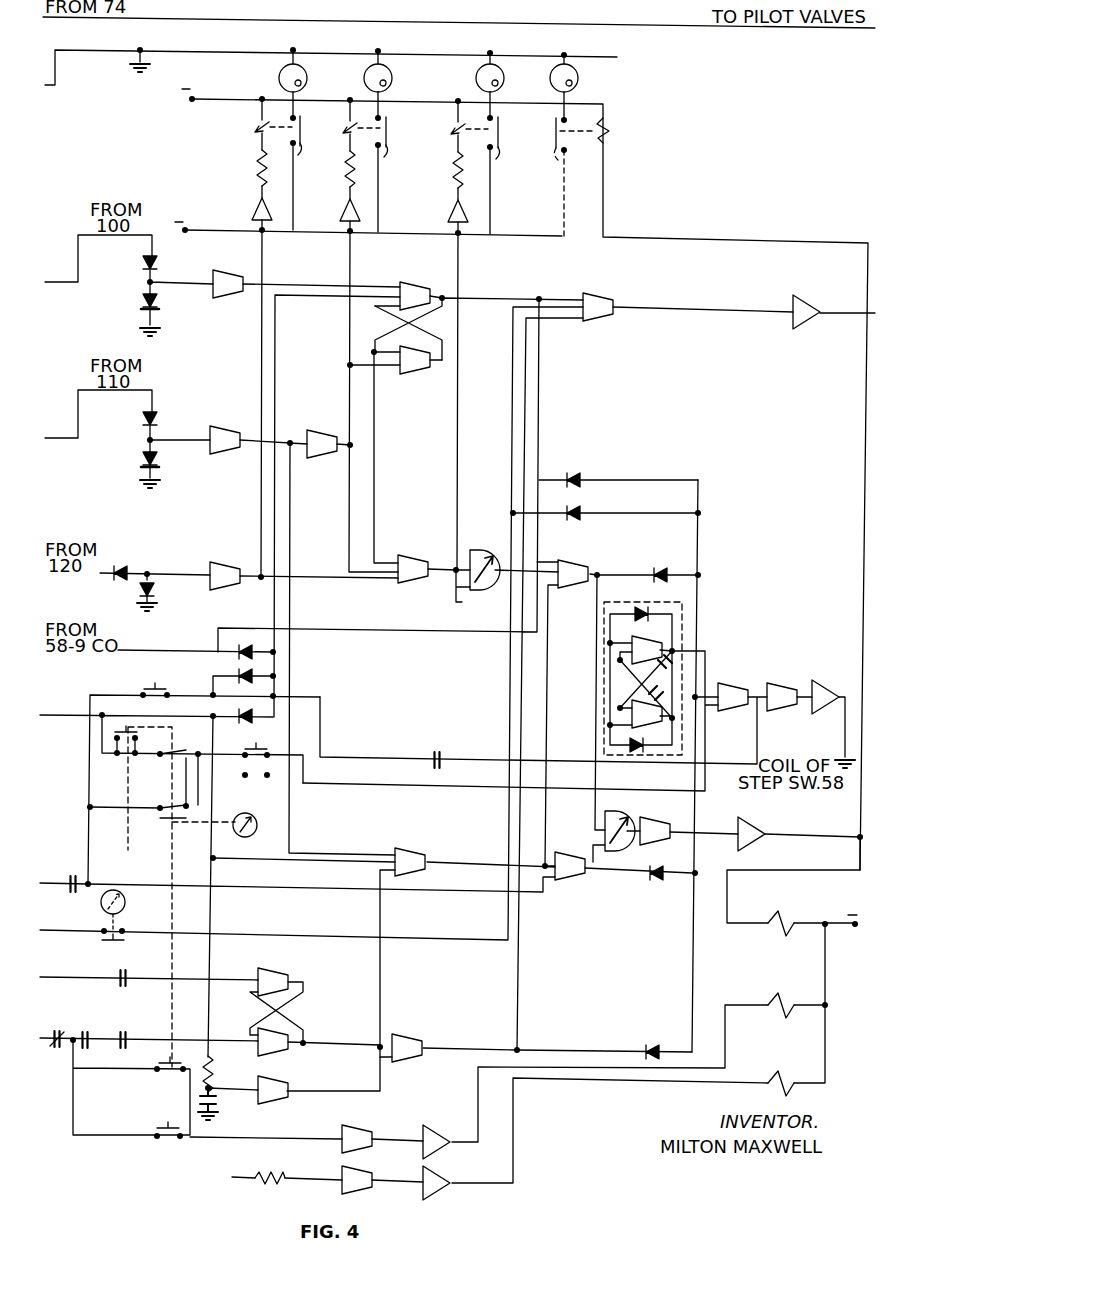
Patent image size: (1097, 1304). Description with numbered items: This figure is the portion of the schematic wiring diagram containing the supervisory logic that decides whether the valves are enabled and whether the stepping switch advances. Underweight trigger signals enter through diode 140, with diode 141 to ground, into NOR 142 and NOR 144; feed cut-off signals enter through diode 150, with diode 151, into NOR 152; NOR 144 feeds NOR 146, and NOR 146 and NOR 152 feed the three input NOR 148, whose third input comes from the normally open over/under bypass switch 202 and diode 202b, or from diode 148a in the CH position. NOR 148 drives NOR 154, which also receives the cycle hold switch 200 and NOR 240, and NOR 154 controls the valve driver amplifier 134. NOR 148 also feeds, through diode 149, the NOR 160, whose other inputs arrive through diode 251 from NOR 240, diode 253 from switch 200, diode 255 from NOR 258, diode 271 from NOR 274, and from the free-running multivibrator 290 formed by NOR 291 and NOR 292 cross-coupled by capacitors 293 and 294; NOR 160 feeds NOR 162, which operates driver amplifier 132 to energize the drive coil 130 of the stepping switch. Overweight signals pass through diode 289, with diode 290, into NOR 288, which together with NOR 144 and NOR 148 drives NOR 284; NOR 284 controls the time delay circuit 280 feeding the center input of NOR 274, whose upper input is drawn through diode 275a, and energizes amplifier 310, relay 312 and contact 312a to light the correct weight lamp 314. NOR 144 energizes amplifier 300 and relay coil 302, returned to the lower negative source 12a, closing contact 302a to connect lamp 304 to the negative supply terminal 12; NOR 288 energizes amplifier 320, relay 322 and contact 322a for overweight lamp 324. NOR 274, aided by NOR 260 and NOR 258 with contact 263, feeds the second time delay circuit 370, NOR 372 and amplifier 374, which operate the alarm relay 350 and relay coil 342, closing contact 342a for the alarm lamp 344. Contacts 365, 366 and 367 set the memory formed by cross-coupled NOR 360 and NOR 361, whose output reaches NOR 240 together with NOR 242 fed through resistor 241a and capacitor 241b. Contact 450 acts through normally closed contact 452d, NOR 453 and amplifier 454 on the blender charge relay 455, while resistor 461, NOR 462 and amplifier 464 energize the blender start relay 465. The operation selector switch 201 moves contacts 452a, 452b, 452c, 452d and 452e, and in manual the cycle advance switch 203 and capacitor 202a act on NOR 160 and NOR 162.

The negative supply terminal 12 is at (183, 225).
The negative voltage source 12a is at (190, 105).
The overweight lamp 324 is at (279, 80).
The lamp 304 is at (364, 80).
The correct weight lamp 314 is at (476, 80).
The alarm lamp 344 is at (583, 82).
The relay 322 is at (257, 132).
The relay coil 302 is at (347, 132).
The relay 312 is at (455, 132).
The contact 312a is at (500, 124).
The contact 322a is at (318, 172).
The contact 302a is at (407, 173).
The contact 342a is at (555, 153).
The relay coil 342 is at (610, 130).
The amplifier 320 is at (254, 212).
The amplifier 300 is at (347, 212).
The amplifier 310 is at (456, 212).
The diode 150 is at (141, 263).
The diode 151 is at (141, 301).
The NOR circuit 152 is at (223, 274).
The diode 140 is at (141, 421).
The diode 141 is at (141, 462).
The NOR circuit 142 is at (234, 436).
The NOR circuit 144 is at (328, 436).
The three input NOR circuit 148 is at (422, 279).
The two input NOR circuit 146 is at (406, 366).
The NOR circuit 154 is at (586, 300).
The driver amplifier 134 is at (828, 284).
The diode 149 is at (573, 476).
The diode 253 is at (580, 510).
The diode 289 is at (118, 568).
The diode / free-running multivibrator 290 is at (150, 594).
The NOR circuit 288 is at (233, 568).
The NOR circuit 284 is at (418, 557).
The time delay circuit 280 is at (468, 602).
The three input NOR circuit 274 is at (588, 570).
The diode 271 is at (668, 570).
The NOR circuit 291 is at (610, 645).
The NOR circuit 292 is at (620, 705).
The capacitor 293 is at (676, 670).
The capacitor 294 is at (670, 705).
The three input NOR circuit 160 is at (746, 686).
The two input NOR circuit 162 is at (796, 686).
The driver amplifier 132 is at (850, 666).
The drive coil 130 is at (843, 736).
The diode 275a is at (239, 650).
The diode 202b is at (238, 676).
The over/under bypass switch 202 is at (150, 684).
The diode 148a is at (246, 722).
The contact 452a is at (113, 740).
The contact 452b is at (162, 760).
The contact 452c is at (160, 806).
The cycle advance switch 203 is at (238, 772).
The operation selector switch 201 is at (236, 834).
The capacitor 202a is at (432, 750).
The contact 263 is at (70, 878).
The cycle hold switch 200 is at (101, 944).
The three input NOR circuit 260 is at (436, 836).
The two input NOR circuit 258 is at (568, 883).
The diode 255 is at (660, 880).
The time delay circuit 370 is at (605, 828).
The NOR circuit 372 is at (684, 812).
The amplifier 374 is at (753, 830).
The alarm relay 350 is at (795, 905).
The blender charge relay 455 is at (773, 1000).
The blender start relay 465 is at (795, 1056).
The diode 251 is at (654, 1048).
The contact 365 is at (120, 984).
The contact 366 is at (78, 1034).
The contact 367 is at (120, 1034).
The contact 450 is at (70, 1048).
The normally closed contact 452d is at (155, 1073).
The switch contact 452e is at (156, 1128).
The resistor 241a is at (212, 1070).
The capacitor 241b is at (218, 1106).
The NOR circuit 242 is at (274, 1102).
The NOR circuit 360 is at (268, 974).
The NOR circuit 361 is at (281, 1058).
The two input NOR circuit 240 is at (403, 1042).
The NOR circuit 453 is at (352, 1151).
The amplifier 454 is at (450, 1098).
The resistor 461 is at (258, 1176).
The NOR circuit 462 is at (362, 1178).
The amplifier 464 is at (430, 1196).